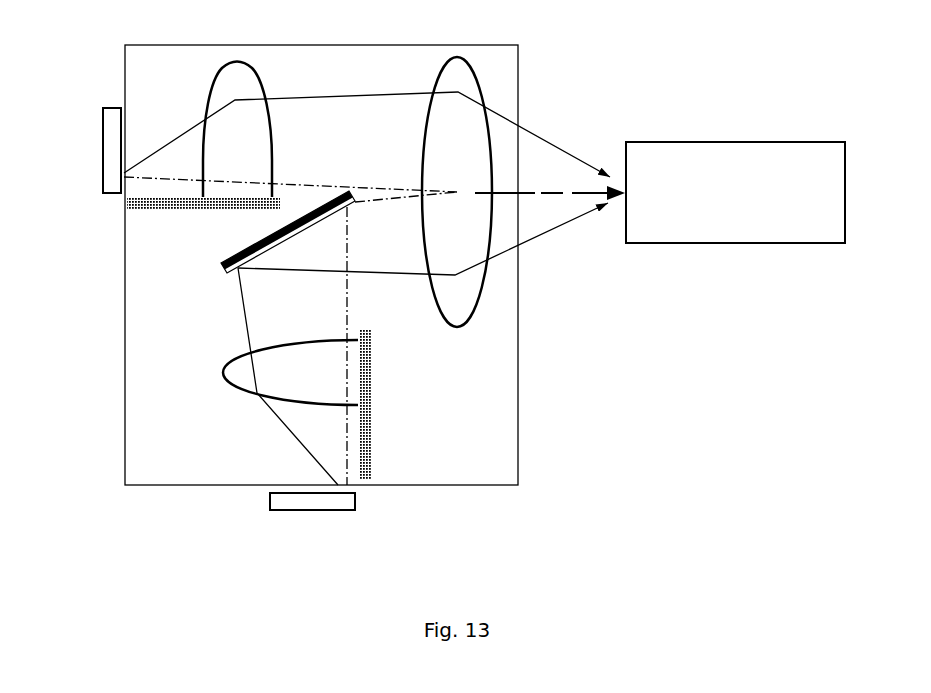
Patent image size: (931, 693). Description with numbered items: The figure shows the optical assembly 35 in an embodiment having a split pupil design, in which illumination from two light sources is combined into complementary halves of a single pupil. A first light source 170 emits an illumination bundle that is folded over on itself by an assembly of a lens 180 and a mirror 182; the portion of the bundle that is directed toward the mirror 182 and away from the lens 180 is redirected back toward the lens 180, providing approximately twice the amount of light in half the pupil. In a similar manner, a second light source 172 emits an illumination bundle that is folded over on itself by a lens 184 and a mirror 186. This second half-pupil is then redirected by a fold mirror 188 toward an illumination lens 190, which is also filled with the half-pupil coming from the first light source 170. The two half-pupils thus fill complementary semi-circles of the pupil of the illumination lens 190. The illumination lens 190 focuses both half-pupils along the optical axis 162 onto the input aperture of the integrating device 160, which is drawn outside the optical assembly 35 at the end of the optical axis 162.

The optical assembly 35 is at (518, 420).
The integrating device 160 is at (722, 243).
The optical axis 162 is at (552, 188).
The light source 170 is at (103, 118).
The light source 172 is at (268, 498).
The lens 180 is at (223, 72).
The mirror 182 is at (145, 210).
The lens 184 is at (223, 378).
The mirror 186 is at (373, 452).
The fold mirror 188 is at (220, 271).
The illumination lens 190 is at (478, 300).